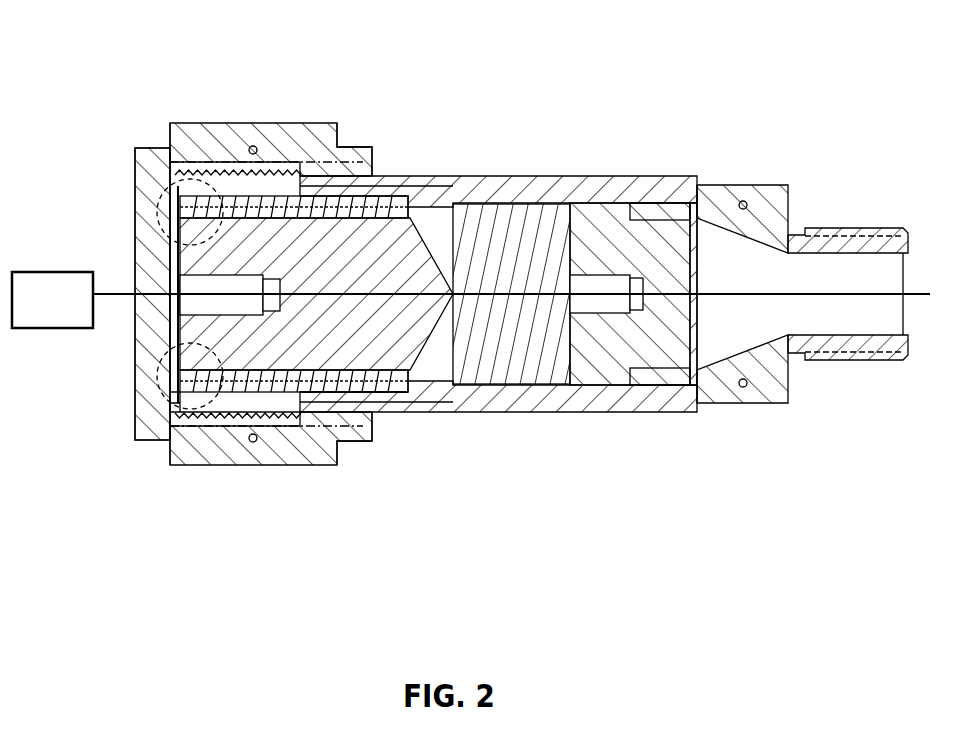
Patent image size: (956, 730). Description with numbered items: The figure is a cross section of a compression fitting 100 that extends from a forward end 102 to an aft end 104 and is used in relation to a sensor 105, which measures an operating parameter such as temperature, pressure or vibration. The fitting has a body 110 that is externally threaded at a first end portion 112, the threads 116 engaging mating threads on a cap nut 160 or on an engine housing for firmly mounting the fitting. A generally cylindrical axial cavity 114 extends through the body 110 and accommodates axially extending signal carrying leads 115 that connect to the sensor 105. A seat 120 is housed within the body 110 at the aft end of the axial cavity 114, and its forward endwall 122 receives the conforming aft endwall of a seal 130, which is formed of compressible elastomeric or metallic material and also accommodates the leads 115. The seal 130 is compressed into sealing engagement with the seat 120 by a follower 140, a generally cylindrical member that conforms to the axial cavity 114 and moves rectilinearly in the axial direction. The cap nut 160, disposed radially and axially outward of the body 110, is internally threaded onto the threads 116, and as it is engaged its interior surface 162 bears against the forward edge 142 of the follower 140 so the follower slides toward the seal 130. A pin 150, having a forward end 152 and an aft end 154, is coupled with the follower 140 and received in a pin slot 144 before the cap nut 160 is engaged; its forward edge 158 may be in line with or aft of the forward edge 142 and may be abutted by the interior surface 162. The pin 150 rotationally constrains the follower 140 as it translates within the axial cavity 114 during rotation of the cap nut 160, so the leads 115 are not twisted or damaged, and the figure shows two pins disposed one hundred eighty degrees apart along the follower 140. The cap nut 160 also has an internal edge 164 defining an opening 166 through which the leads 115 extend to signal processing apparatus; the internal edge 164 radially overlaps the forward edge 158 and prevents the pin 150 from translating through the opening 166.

The compression fitting 100 is at (800, 118).
The forward end 102 is at (170, 504).
The aft end 104 is at (733, 435).
The sensor 105 is at (52, 300).
The body 110 is at (502, 187).
The first end portion 112 is at (363, 172).
The axial cavity 114 is at (424, 204).
The signal carrying leads 115 is at (835, 295).
The threads 116 is at (243, 166).
The seat 120 is at (648, 243).
The forward endwall 122 is at (573, 223).
The seal 130 is at (543, 232).
The follower 140 is at (317, 247).
The forward edge 142 is at (180, 265).
The pin slot 144 is at (402, 384).
The pin 150 is at (323, 378).
The forward end 152 is at (186, 402).
The aft end 154 is at (388, 398).
The forward edge 158 is at (176, 402).
The cap nut 160 is at (199, 140).
The interior surface 162 is at (170, 193).
The internal edge 164 is at (173, 392).
The opening 166 is at (145, 340).